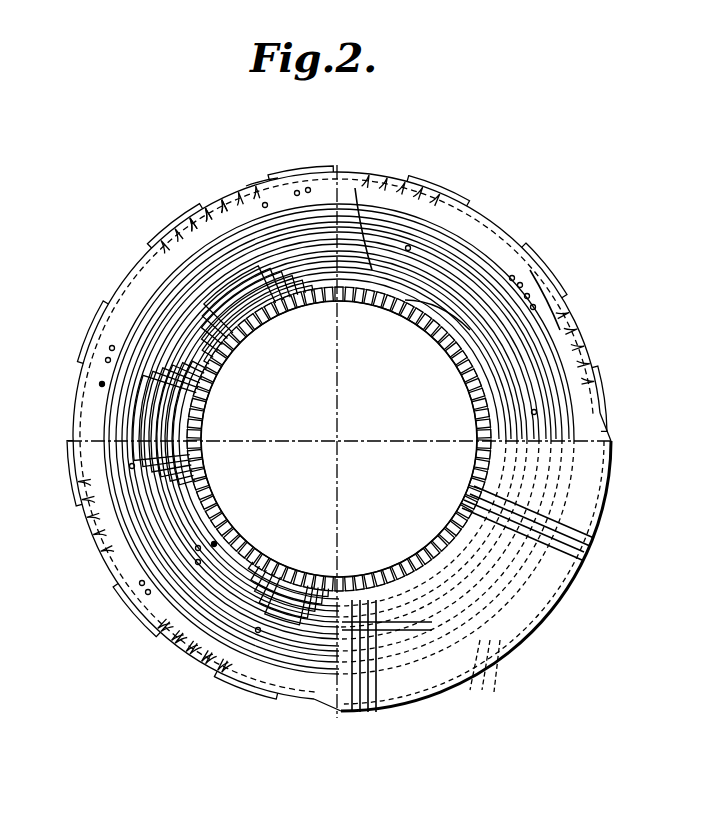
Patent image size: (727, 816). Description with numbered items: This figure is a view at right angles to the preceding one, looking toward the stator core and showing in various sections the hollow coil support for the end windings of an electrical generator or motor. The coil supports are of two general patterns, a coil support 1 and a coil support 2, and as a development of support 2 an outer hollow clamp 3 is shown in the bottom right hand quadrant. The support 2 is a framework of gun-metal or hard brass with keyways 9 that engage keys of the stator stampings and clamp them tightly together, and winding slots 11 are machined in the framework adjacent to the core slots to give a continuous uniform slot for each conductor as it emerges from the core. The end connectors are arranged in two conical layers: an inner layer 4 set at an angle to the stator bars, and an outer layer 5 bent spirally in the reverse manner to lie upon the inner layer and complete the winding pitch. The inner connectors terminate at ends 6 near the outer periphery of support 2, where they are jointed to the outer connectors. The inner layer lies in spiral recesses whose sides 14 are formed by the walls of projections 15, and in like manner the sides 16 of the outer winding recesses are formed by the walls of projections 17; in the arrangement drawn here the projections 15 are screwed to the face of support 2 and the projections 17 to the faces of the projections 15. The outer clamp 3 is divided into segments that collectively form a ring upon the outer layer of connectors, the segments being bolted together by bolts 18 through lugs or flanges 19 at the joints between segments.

The coil support 1 is at (401, 245).
The coil support 2 is at (488, 258).
The outer hollow clamp 3 is at (448, 702).
The inner layer of end connectors 4 is at (282, 742).
The outer layer of end connectors 5 is at (339, 439).
The ends of inner layer connectors 6 is at (422, 186).
The keyways 9 is at (302, 178).
The winding slots 11 is at (250, 536).
The sides of recesses 14 is at (252, 190).
The projections 15 is at (317, 413).
The sides of winding recesses 16 is at (364, 188).
The projections 17 is at (533, 401).
The bolts 18 is at (382, 702).
The lugs or flanges 19 is at (354, 714).